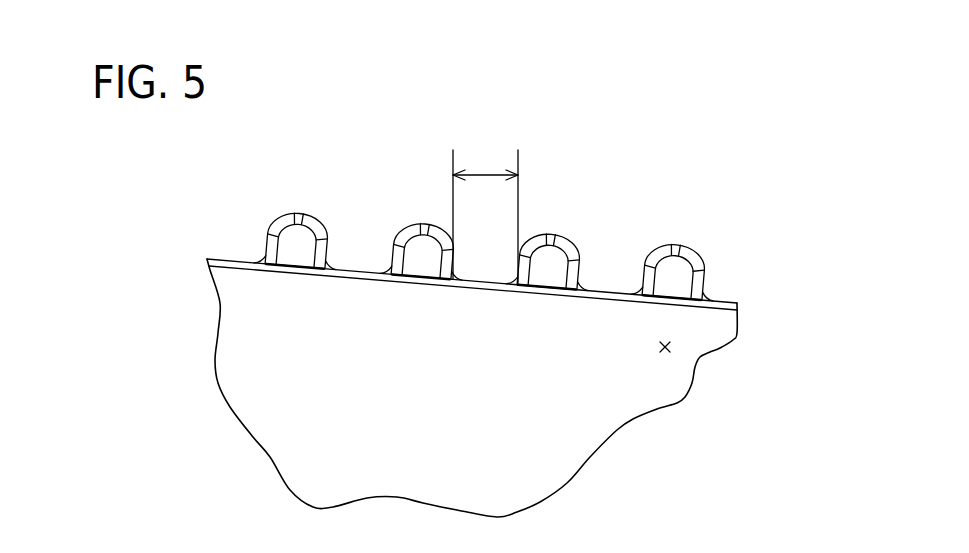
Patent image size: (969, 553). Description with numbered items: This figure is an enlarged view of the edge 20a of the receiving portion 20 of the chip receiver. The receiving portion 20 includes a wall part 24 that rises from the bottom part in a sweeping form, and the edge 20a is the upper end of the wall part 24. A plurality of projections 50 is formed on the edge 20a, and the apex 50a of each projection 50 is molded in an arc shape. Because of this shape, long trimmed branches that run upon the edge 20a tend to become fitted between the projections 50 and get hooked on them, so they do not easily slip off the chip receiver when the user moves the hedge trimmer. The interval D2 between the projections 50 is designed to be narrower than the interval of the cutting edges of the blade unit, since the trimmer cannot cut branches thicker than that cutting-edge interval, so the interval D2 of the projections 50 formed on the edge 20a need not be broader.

The receiving portion 20 is at (687, 405).
The edge of the receiving portion 20a is at (718, 298).
The wall part 24 is at (668, 346).
The projections 50 is at (585, 252).
The apex 50a is at (560, 233).
The interval of the projections D2 is at (485, 214).